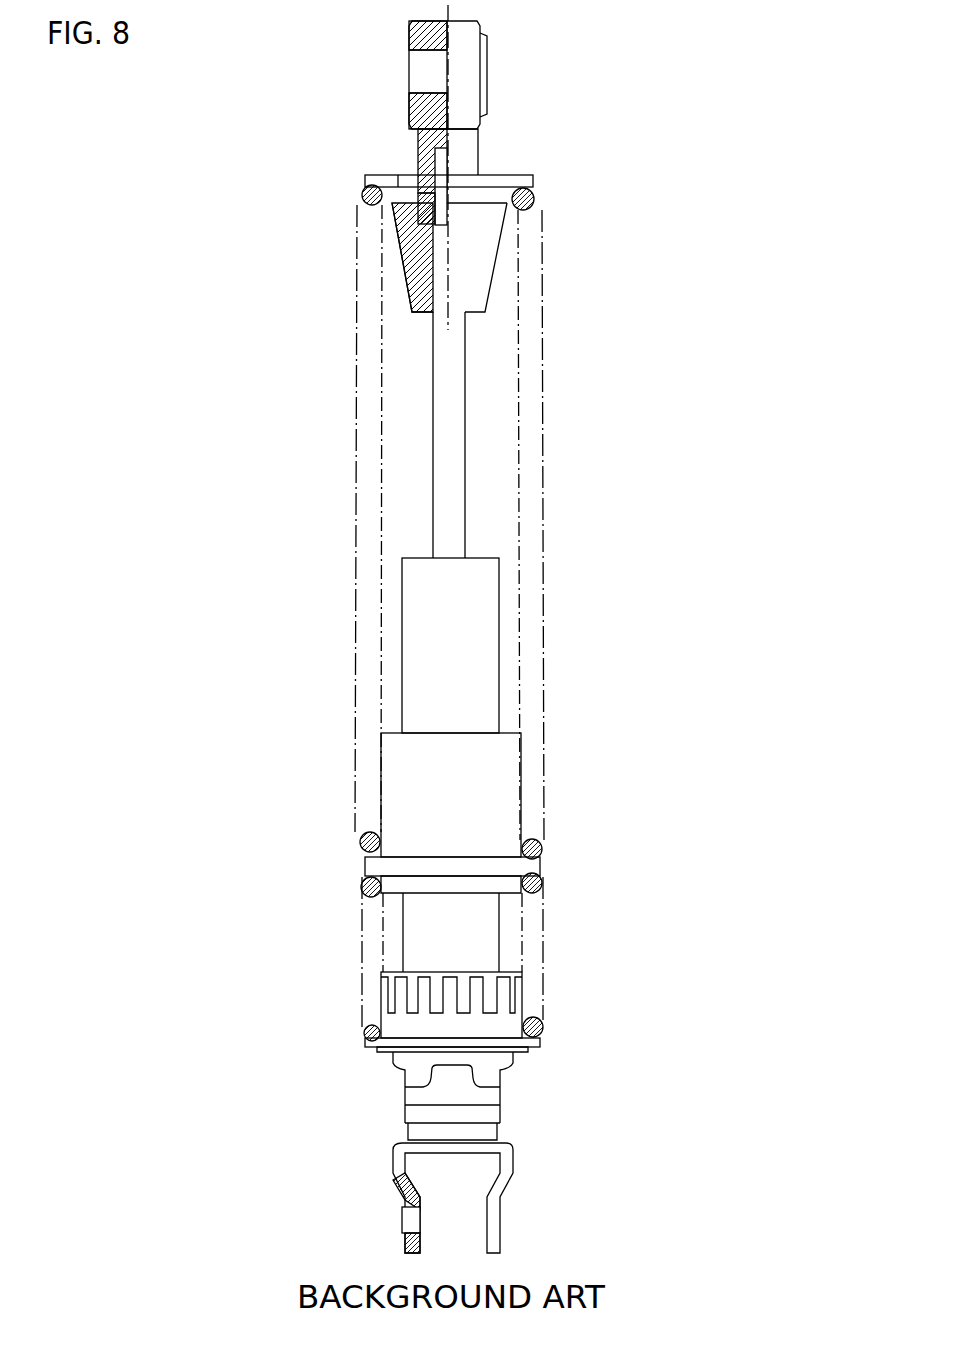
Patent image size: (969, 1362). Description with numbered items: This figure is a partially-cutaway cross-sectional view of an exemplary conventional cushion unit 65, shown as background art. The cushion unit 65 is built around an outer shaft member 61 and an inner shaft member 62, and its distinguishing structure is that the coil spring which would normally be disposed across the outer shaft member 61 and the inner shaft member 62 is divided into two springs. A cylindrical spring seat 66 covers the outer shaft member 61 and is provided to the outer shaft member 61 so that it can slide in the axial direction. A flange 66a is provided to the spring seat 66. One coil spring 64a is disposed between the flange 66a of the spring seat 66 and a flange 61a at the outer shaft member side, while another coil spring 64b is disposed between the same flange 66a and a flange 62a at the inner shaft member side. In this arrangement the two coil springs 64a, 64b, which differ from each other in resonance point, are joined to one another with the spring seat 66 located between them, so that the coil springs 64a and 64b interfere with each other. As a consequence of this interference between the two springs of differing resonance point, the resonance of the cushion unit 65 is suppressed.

The cushion unit 65 is at (597, 156).
The inner shaft member 62 is at (448, 458).
The flange at the inner shaft member side 62a is at (365, 181).
The coil spring 64b is at (356, 764).
The cylindrical spring seat 66 is at (480, 800).
The flange 66a is at (482, 864).
The outer shaft member 61 is at (427, 932).
The coil spring 64a is at (362, 968).
The flange at the outer shaft member side 61a is at (365, 1040).